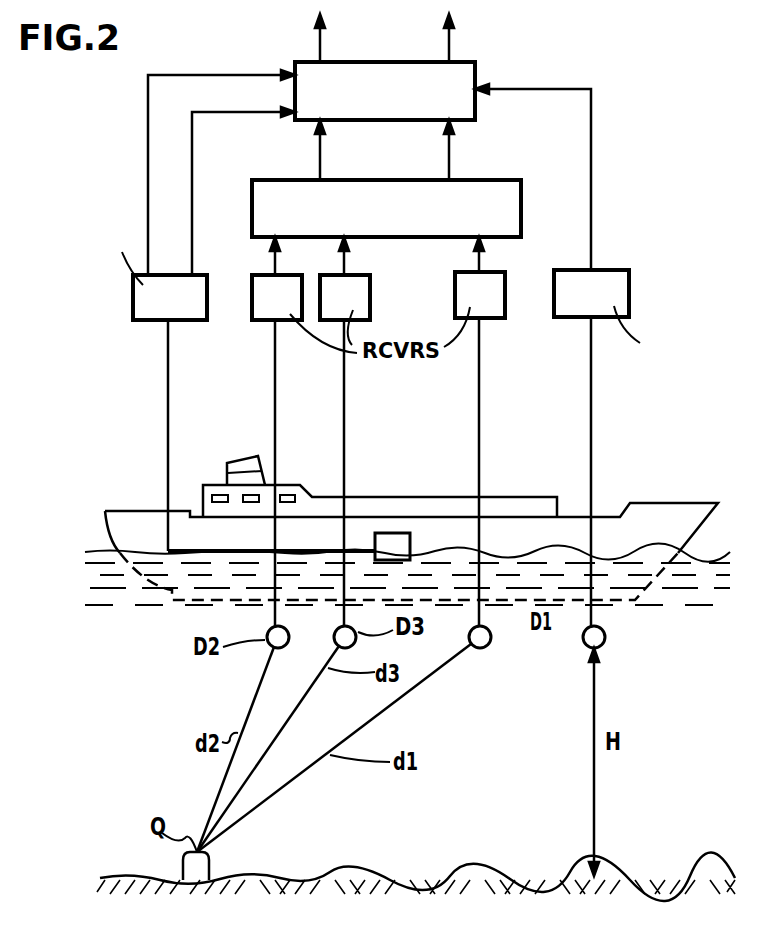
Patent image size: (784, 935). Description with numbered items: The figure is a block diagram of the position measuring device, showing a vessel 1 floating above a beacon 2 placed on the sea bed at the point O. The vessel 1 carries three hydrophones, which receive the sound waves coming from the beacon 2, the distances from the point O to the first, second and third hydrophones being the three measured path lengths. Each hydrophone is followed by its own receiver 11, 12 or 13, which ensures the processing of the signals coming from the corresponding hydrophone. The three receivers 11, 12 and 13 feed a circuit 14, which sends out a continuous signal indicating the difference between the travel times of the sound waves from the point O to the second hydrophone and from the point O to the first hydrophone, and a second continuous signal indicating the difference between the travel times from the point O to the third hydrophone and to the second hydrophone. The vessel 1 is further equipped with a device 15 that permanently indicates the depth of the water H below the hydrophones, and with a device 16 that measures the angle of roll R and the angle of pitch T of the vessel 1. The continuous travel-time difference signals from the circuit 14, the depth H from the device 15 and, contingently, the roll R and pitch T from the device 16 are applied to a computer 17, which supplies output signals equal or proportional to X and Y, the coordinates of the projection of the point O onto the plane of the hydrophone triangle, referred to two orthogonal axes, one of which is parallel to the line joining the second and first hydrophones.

The vessel 1 is at (655, 510).
The beacon 2 is at (197, 866).
The receiver 11 is at (485, 292).
The receiver 12 is at (258, 284).
The receiver 13 is at (358, 291).
The circuit 14 is at (262, 190).
The depth indicating device 15 is at (620, 290).
The roll and pitch measuring device 16 is at (163, 304).
The computer 17 is at (468, 80).